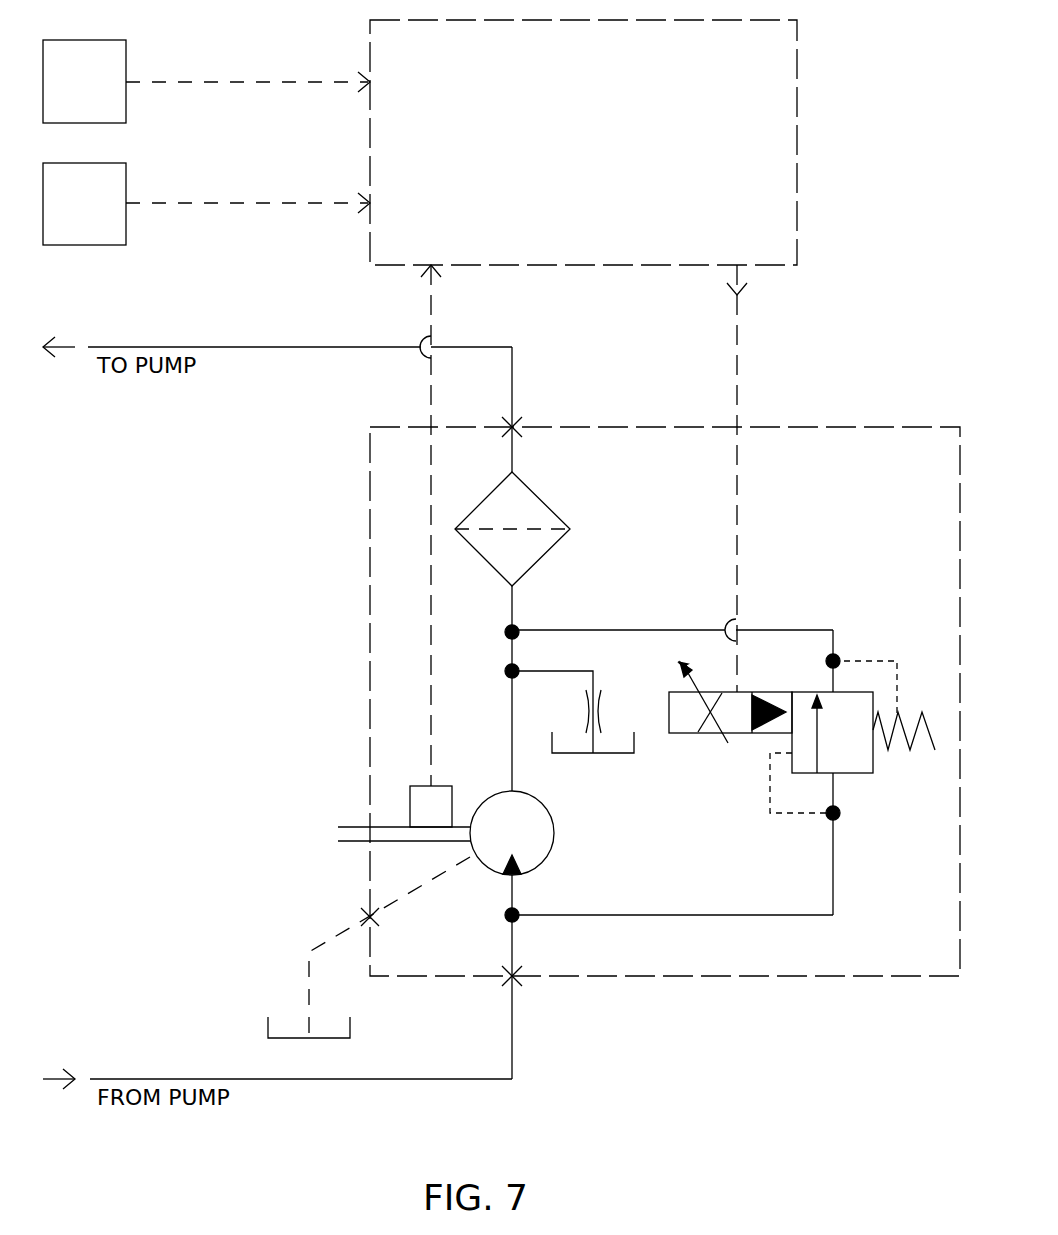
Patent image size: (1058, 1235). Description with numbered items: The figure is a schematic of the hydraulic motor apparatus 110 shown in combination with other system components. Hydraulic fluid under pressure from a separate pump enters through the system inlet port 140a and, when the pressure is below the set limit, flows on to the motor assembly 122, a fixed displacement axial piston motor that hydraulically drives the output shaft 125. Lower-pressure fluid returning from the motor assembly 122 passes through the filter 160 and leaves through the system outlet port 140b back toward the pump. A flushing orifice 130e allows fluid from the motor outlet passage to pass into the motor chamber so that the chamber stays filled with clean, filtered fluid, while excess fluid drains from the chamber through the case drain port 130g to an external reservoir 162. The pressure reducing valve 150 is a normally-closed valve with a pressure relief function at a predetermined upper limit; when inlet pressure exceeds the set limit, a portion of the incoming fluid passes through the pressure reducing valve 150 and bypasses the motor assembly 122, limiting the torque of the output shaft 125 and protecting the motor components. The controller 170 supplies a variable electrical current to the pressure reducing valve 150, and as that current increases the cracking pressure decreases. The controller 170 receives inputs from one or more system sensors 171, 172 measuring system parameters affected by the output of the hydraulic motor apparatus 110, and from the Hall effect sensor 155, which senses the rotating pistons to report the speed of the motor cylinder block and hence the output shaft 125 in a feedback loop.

The hydraulic motor apparatus 110 is at (939, 467).
The motor assembly 122 is at (557, 863).
The output shaft 125 is at (348, 826).
The flushing orifice 130e is at (625, 709).
The case drain port 130g is at (366, 908).
The system inlet port 140a is at (517, 984).
The system outlet port 140b is at (518, 420).
The pressure reducing valve 150 is at (861, 797).
The Hall effect sensor 155 is at (452, 800).
The filter 160 is at (540, 500).
The external reservoir 162 is at (268, 1027).
The controller 170 is at (777, 60).
The system sensor 171 is at (106, 92).
The system sensor 172 is at (106, 213).